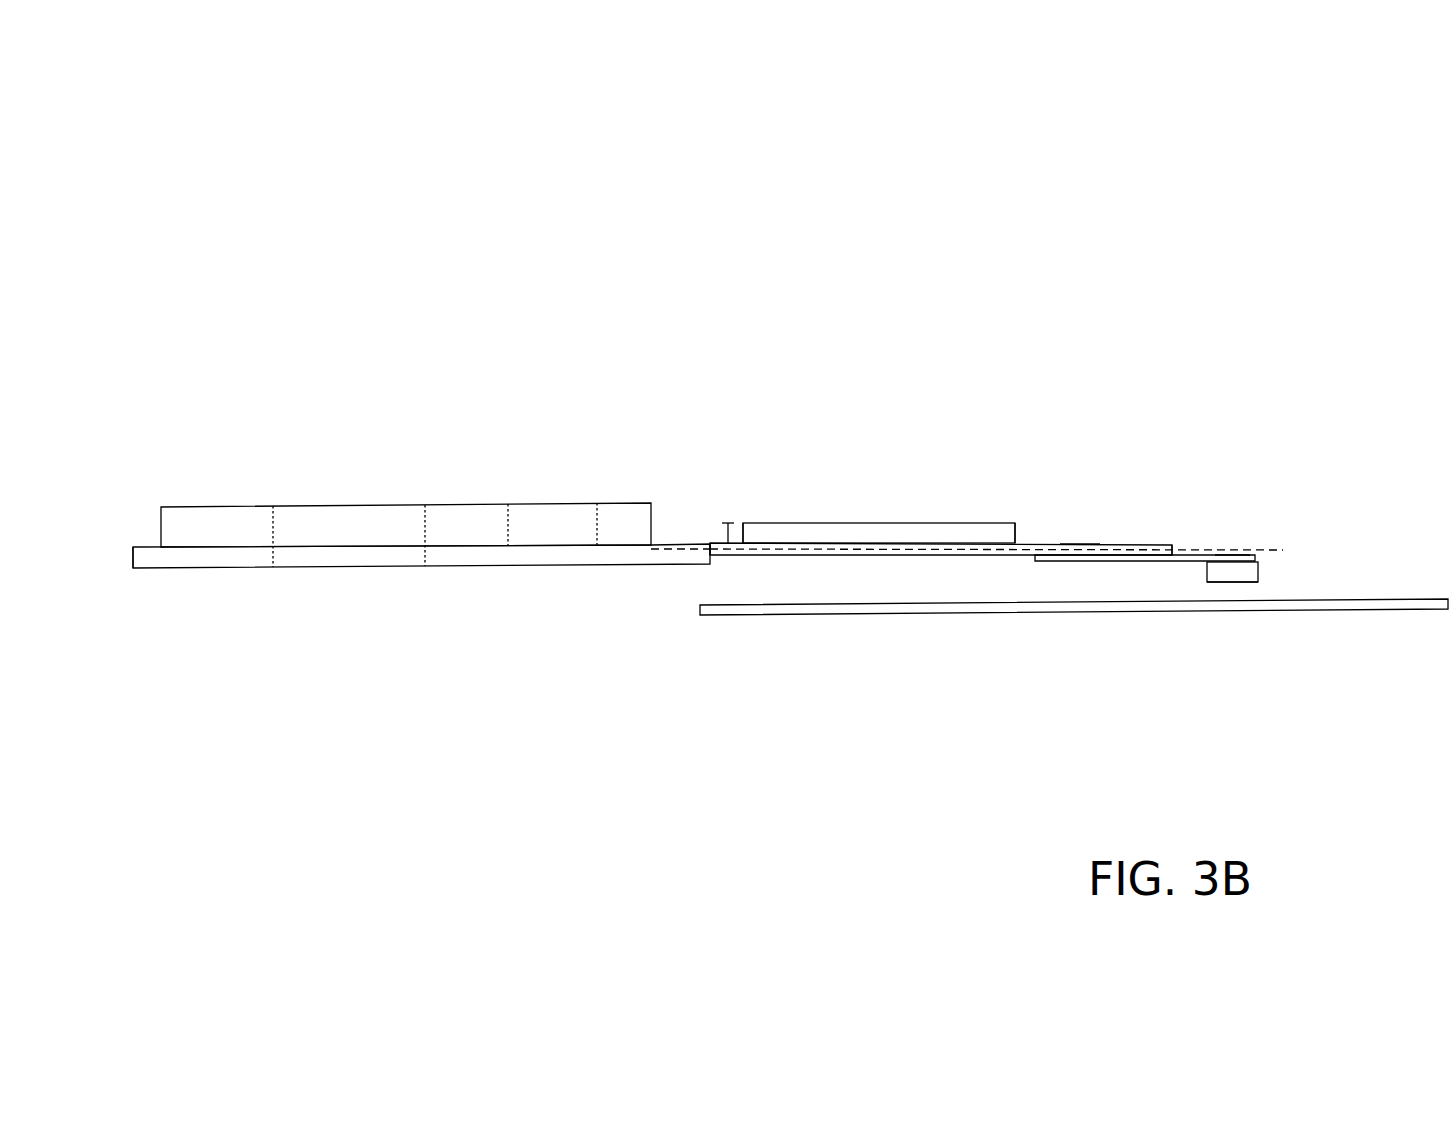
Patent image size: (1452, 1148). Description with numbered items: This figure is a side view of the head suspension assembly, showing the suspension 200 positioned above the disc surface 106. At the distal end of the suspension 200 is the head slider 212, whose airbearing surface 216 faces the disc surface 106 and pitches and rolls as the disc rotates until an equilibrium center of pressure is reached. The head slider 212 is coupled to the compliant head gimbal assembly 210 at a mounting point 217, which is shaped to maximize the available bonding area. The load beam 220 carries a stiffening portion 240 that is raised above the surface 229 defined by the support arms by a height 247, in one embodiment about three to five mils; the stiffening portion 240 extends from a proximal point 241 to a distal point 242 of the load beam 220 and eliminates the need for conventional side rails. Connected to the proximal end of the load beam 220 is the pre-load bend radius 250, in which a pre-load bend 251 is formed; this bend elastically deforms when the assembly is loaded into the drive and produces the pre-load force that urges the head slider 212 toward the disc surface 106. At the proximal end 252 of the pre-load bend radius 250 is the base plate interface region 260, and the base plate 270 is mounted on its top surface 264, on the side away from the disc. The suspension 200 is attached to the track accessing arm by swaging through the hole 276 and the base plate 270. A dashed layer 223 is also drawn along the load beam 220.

The suspension 200 is at (805, 225).
The disc surface 106 is at (1352, 601).
The head gimbal assembly 210 is at (1192, 555).
The head slider 212 is at (1258, 570).
The airbearing surface 216 is at (1225, 596).
The mounting point 217 is at (1233, 560).
The load beam 220 is at (1108, 552).
The conductive trace layer 223 is at (1182, 550).
The surface 229 is at (1088, 531).
The stiffening portion 240 is at (857, 510).
The proximal point 241 is at (743, 543).
The distal point 242 is at (1015, 523).
The height 247 is at (728, 523).
The pre-load bend radius 250 is at (707, 555).
The pre-load bend 251 is at (715, 557).
The proximal end 252 is at (650, 546).
The base plate interface region 260 is at (367, 560).
The top surface 264 is at (150, 534).
The base plate 270 is at (223, 500).
The hole 276 is at (337, 506).